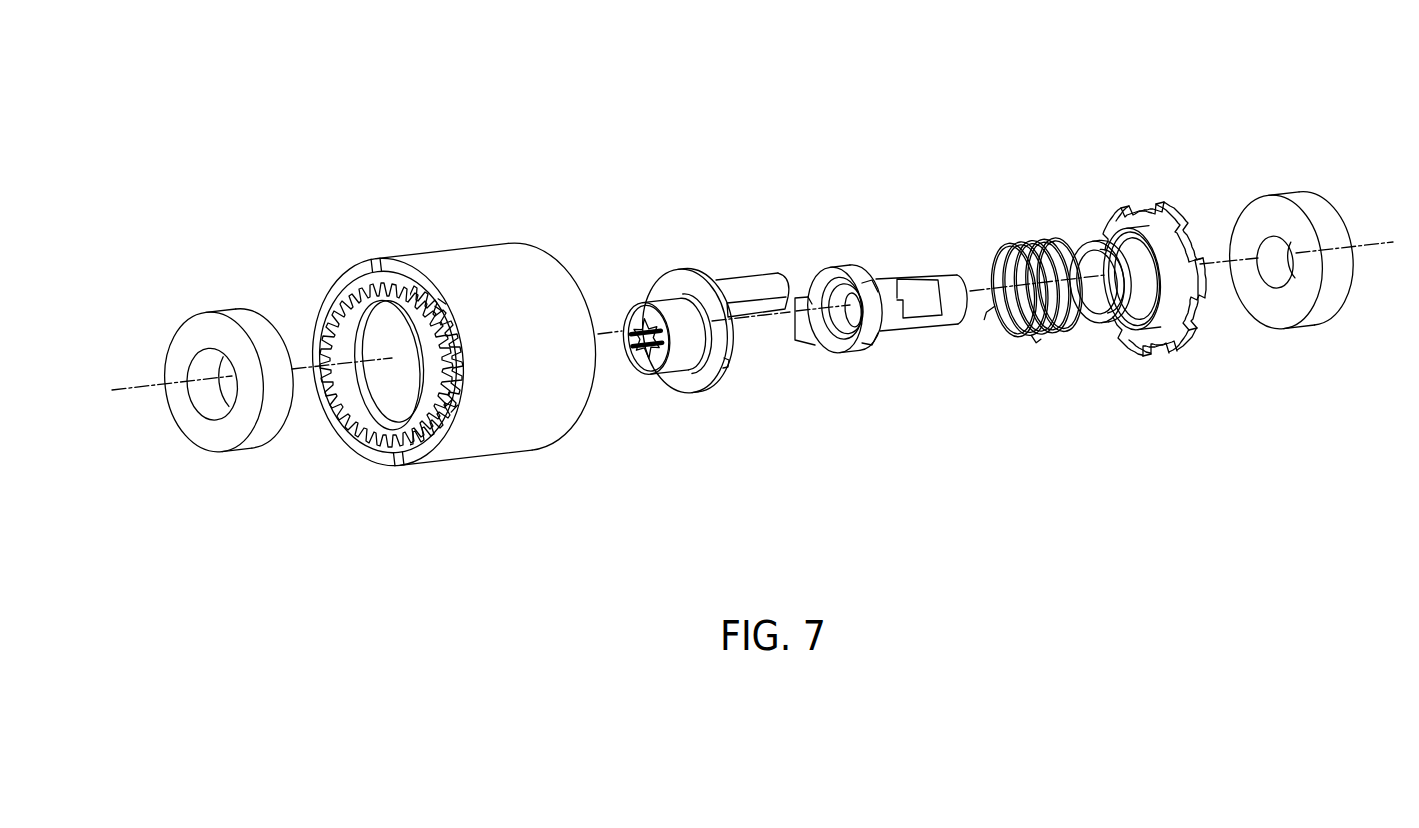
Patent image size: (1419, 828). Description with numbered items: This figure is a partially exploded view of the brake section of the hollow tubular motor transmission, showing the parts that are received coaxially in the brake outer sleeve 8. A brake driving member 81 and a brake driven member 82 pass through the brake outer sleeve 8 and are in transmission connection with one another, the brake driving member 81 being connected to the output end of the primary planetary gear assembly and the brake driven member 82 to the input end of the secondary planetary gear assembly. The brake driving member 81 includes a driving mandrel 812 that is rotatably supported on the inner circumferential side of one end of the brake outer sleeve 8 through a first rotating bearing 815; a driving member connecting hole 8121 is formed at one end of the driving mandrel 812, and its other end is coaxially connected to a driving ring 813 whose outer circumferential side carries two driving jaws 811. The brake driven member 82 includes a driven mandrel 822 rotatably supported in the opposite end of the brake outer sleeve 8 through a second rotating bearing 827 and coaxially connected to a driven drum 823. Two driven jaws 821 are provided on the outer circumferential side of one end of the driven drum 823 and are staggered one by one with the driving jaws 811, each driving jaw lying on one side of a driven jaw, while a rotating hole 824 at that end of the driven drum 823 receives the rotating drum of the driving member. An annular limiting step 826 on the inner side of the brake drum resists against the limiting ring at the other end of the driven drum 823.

The brake outer sleeve 8 is at (478, 285).
The first rotating bearing 815 is at (245, 320).
The brake driving member 81 is at (679, 313).
The driving jaws 811 is at (752, 287).
The driving mandrel 812 is at (662, 303).
The driving member connecting hole 8121 is at (630, 358).
The driving ring 813 is at (723, 370).
The brake driven member 82 is at (854, 305).
The driven jaws 821 is at (913, 297).
The driven mandrel 822 is at (937, 328).
The driven drum 823 is at (858, 347).
The rotating hole 824 is at (832, 325).
The annular limiting step 826 is at (845, 293).
The second rotating bearing 827 is at (1277, 213).